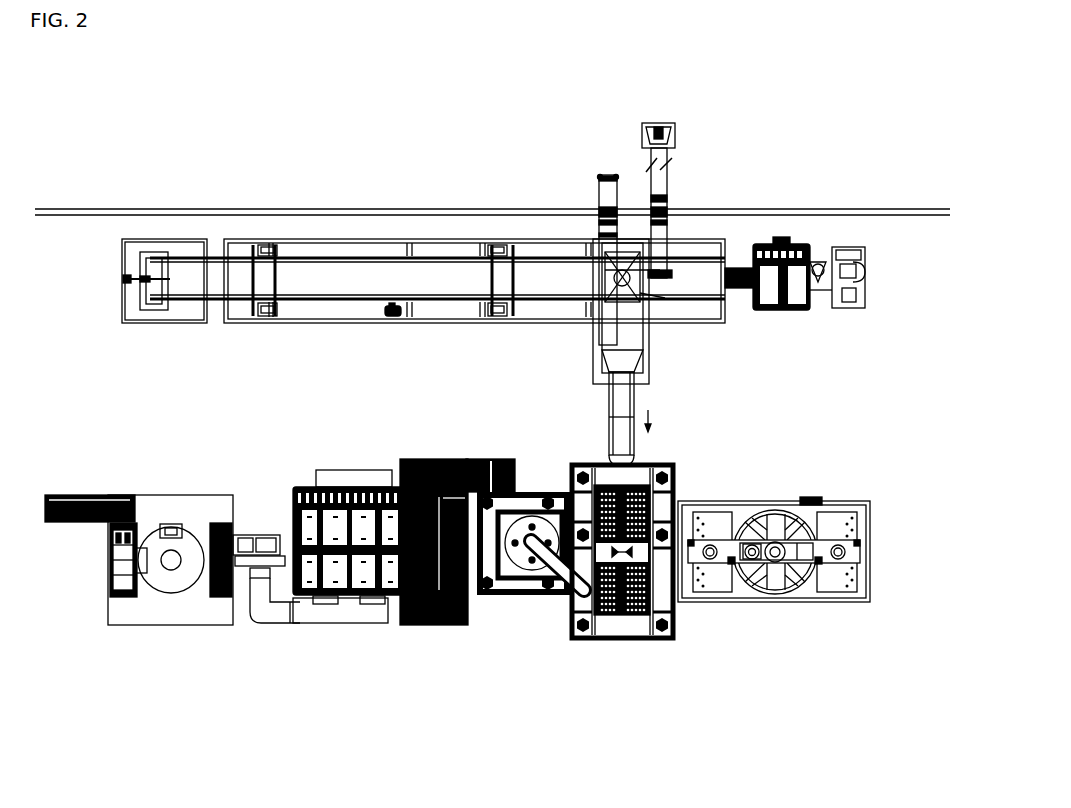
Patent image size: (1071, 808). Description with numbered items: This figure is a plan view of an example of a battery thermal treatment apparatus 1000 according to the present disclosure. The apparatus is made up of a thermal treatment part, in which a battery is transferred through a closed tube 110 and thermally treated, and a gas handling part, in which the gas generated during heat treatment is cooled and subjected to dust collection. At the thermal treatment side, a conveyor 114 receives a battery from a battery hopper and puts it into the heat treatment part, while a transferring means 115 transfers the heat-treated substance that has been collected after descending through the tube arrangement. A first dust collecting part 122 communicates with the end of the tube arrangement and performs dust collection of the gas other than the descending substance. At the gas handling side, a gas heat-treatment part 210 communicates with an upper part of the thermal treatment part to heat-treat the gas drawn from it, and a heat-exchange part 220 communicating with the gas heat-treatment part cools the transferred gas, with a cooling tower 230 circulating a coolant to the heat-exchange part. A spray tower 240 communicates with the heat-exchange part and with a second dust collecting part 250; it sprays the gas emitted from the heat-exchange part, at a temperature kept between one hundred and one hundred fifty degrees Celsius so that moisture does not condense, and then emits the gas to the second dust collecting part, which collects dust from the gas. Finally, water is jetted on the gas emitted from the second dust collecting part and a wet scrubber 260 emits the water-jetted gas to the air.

The battery thermal treatment apparatus 1000 is at (128, 104).
The closed tube 110 is at (371, 250).
The conveyor 114 is at (660, 180).
The transferring means 115 is at (607, 194).
The first dust collecting part 122 is at (812, 306).
The gas heat-treatment part 210 is at (640, 362).
The heat-exchange part 220 is at (737, 607).
The cooling tower 230 is at (618, 643).
The spray tower 240 is at (519, 600).
The second dust collecting part 250 is at (395, 628).
The wet scrubber 260 is at (178, 615).